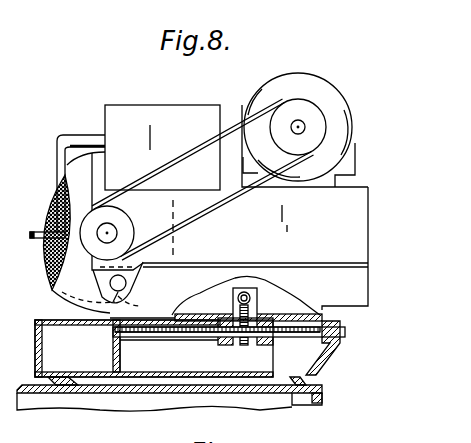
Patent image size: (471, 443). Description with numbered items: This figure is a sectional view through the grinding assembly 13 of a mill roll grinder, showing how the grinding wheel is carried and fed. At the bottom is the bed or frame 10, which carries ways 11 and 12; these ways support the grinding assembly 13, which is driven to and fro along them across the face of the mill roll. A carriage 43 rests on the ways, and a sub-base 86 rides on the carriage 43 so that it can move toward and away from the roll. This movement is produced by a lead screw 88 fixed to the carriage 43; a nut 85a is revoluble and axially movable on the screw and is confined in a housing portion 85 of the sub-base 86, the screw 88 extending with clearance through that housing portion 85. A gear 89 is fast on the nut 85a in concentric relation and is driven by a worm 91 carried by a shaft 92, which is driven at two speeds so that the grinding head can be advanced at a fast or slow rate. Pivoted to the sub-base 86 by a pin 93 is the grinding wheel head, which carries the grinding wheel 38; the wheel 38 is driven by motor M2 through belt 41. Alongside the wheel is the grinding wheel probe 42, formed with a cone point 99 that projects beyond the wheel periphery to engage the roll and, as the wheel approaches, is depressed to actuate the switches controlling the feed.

The grinding assembly 13 is at (136, 92).
The belt 41 is at (240, 128).
The motor M2 is at (326, 88).
The grinding wheel probe 42 is at (58, 153).
The cone point 99 is at (33, 231).
The grinding wheel 38 is at (68, 262).
The pin 93 is at (148, 283).
The worm 91 is at (244, 290).
The shaft 92 is at (258, 302).
The nut 85a is at (254, 320).
The sub-base 86 is at (342, 305).
The carriage 43 is at (80, 364).
The lead screw 88 is at (164, 338).
The gear 89 is at (230, 357).
The housing portion 85 is at (266, 343).
The way 12 is at (62, 380).
The bed or frame 10 is at (141, 394).
The way 11 is at (301, 396).